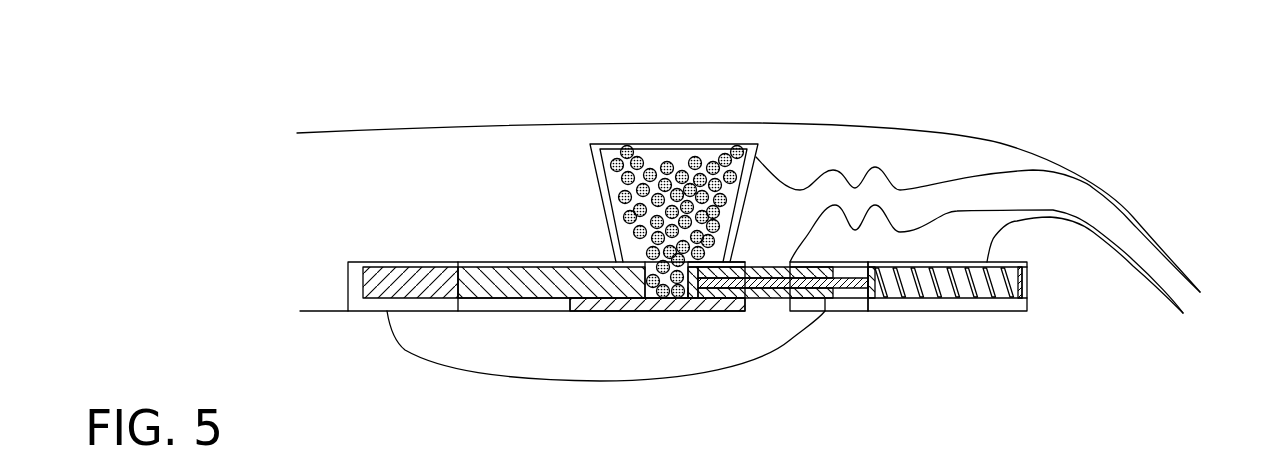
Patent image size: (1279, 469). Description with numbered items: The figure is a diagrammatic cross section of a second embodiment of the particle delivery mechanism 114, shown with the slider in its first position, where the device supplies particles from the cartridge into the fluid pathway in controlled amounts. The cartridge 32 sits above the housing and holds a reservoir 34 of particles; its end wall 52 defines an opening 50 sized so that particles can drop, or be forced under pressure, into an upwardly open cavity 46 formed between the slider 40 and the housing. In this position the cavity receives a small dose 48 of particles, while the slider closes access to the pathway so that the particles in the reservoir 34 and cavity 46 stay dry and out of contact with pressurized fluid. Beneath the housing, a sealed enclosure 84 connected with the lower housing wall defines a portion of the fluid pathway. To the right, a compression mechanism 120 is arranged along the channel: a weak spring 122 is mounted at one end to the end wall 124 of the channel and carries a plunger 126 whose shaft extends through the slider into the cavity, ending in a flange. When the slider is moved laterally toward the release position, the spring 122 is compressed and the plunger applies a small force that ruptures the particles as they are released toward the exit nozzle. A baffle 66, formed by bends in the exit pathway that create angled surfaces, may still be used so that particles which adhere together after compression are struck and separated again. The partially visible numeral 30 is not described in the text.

The particle delivery mechanism 114 is at (490, 163).
The cartridge 32 is at (657, 144).
The reservoir 34 is at (606, 148).
The slider 40 is at (480, 262).
The opening 50 is at (649, 262).
The end wall 52 is at (714, 262).
The cavity 46 is at (663, 299).
The dose 48 is at (677, 298).
The baffle 66 is at (888, 215).
The sealed enclosure 84 is at (400, 343).
The element slider is at (783, 298).
The plunger 126 is at (870, 299).
The compression mechanism 120 is at (877, 302).
The spring 122 is at (974, 281).
The end wall 124 is at (1027, 282).
The dispenser 30 is at (1023, 466).